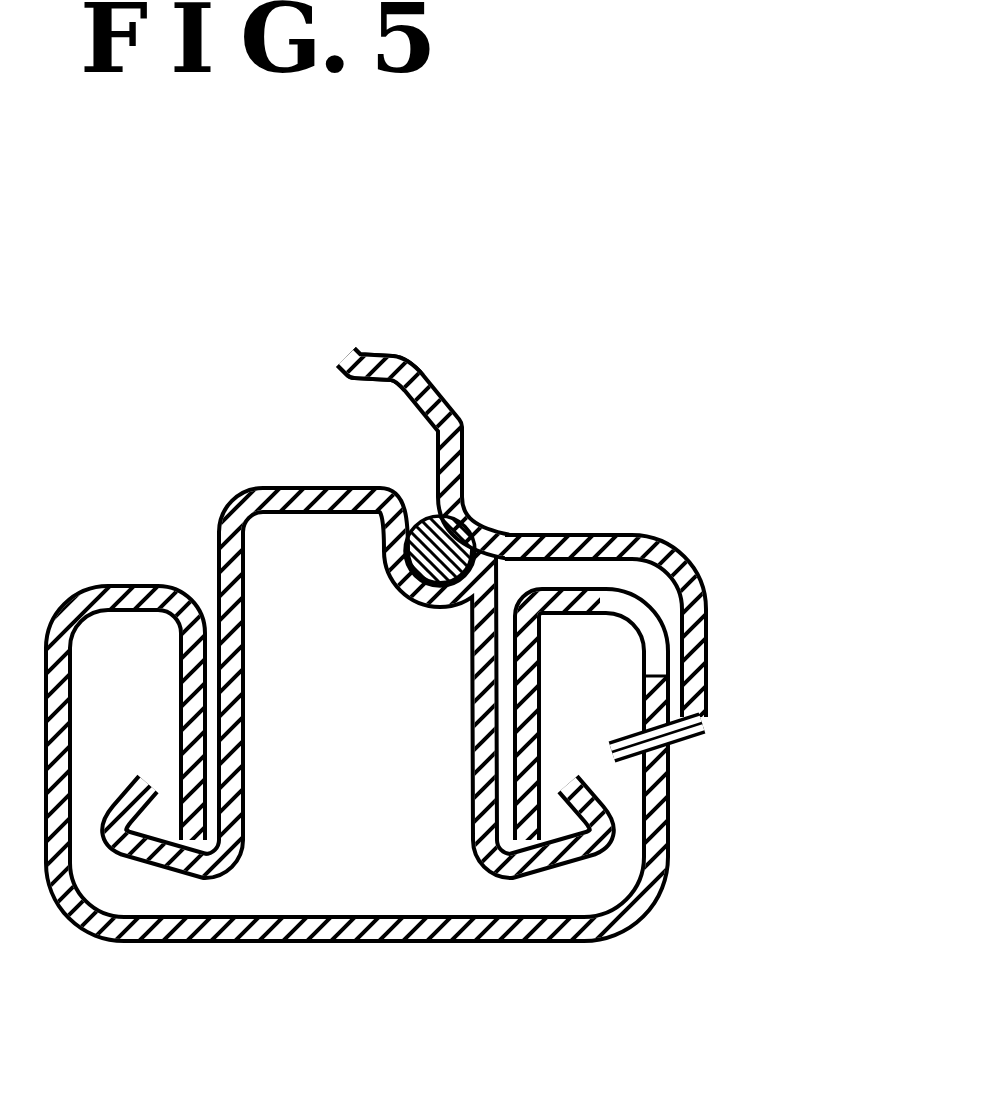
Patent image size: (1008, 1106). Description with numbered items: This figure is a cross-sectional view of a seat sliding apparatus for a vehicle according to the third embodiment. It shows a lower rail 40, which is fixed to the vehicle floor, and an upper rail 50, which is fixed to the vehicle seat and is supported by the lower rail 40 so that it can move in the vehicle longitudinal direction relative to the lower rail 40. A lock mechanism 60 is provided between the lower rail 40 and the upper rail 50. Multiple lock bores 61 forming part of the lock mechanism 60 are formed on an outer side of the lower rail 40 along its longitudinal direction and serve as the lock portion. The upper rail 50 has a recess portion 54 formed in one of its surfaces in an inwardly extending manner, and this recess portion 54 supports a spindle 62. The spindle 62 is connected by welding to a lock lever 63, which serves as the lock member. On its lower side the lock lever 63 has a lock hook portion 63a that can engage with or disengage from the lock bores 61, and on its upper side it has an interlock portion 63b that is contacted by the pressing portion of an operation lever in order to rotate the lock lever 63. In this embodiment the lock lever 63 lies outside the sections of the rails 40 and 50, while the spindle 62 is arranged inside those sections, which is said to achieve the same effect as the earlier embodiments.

The lower rail 40 is at (640, 905).
The upper rail 50 is at (237, 507).
The recess portion 54 is at (421, 592).
The lock mechanism 60 is at (614, 482).
The lock bores 61 is at (670, 777).
The spindle 62 is at (480, 510).
The lock lever 63 is at (477, 380).
The lock hook portion 63a is at (680, 732).
The interlock portion 63b is at (380, 345).